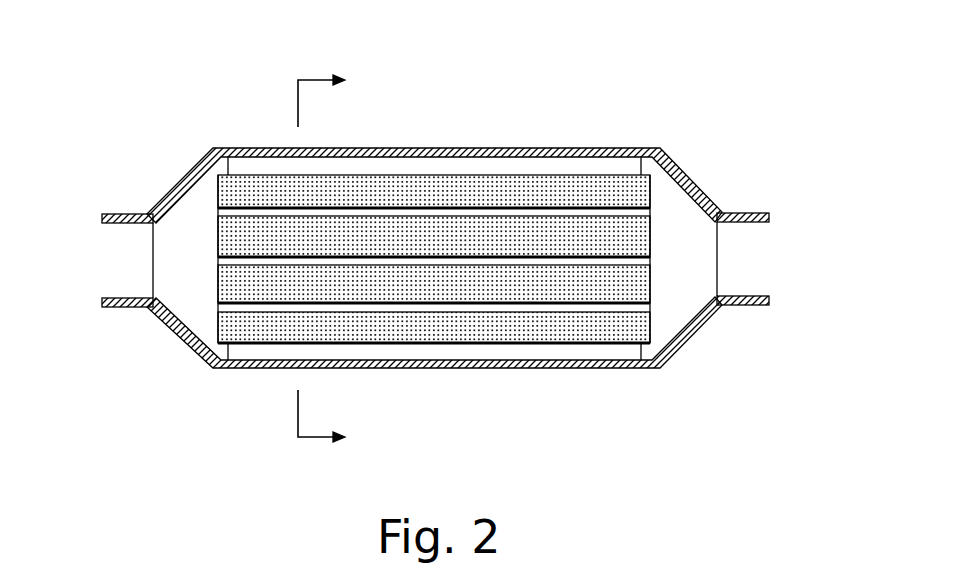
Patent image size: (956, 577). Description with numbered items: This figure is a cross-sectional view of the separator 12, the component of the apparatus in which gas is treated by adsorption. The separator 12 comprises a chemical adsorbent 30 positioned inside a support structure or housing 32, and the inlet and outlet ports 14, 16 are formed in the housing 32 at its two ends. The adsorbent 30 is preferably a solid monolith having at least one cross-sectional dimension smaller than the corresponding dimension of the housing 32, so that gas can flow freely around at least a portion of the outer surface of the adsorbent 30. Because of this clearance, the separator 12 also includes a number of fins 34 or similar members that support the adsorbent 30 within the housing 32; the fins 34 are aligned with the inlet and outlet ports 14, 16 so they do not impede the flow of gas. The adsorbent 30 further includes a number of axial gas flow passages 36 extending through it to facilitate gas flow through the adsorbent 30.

The separator 12 is at (635, 117).
The inlet port 14 is at (105, 282).
The outlet port 16 is at (762, 282).
The chemical adsorbent 30 is at (533, 174).
The housing 32 is at (698, 183).
The fins 34 is at (472, 162).
The axial gas flow passages 36 is at (592, 262).